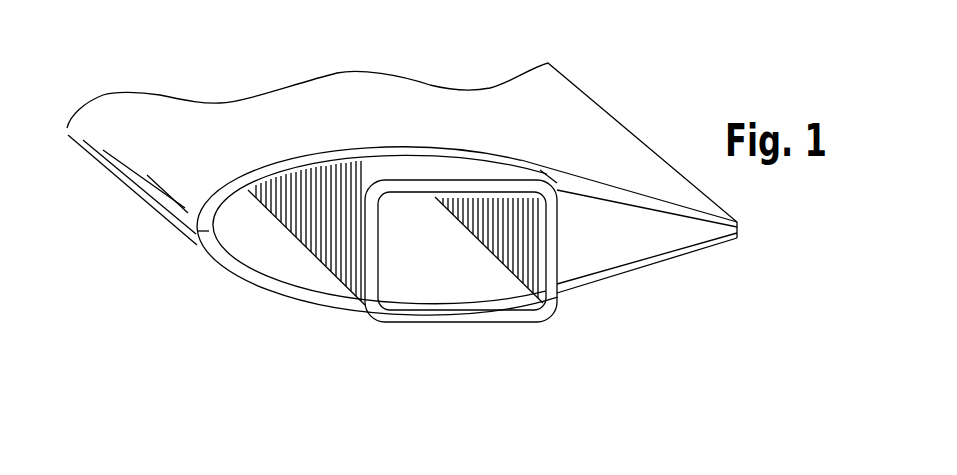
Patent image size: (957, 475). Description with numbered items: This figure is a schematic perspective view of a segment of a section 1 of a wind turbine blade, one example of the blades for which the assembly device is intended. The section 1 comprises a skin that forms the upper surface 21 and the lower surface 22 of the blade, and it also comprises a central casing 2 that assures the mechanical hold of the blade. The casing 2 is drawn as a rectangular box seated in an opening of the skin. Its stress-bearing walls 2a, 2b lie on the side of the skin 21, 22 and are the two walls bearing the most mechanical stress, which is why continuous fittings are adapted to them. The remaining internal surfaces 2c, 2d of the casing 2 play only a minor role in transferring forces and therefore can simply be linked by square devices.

The section of wind turbine blade 1 is at (660, 93).
The central casing 2 is at (340, 264).
The wall 2a is at (395, 167).
The wall 2b is at (428, 322).
The internal surface 2c is at (343, 196).
The internal surface 2d is at (535, 237).
The upper surface 21 is at (423, 120).
The lower surface 22 is at (297, 323).